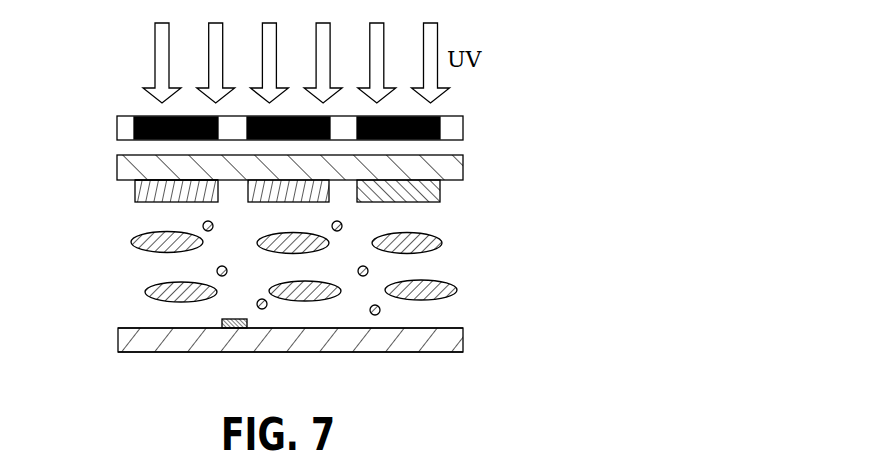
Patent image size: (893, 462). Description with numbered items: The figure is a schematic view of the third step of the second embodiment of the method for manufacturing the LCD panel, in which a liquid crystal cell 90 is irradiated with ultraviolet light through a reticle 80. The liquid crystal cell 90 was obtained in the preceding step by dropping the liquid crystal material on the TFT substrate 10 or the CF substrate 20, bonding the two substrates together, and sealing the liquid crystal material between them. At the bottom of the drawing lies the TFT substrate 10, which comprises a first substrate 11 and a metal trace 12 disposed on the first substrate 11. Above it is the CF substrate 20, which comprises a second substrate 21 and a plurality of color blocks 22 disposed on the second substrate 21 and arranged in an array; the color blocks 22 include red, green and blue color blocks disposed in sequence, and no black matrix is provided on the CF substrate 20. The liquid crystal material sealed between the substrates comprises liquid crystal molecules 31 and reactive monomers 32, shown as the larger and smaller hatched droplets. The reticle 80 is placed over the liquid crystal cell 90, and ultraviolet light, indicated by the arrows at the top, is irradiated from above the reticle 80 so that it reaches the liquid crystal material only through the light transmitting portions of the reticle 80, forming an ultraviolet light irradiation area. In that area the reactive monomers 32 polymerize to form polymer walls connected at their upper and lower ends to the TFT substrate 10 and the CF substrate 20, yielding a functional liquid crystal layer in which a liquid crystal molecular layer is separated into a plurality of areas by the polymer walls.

The TFT substrate 10 is at (463, 340).
The first substrate 11 is at (180, 343).
The metal trace 12 is at (222, 323).
The CF substrate 20 is at (463, 168).
The second substrate 21 is at (140, 188).
The color blocks 22 is at (155, 192).
The liquid crystal molecules 31 is at (145, 288).
The reactive monomers 32 is at (203, 225).
The reticle 80 is at (463, 126).
The liquid crystal cell 90 is at (403, 352).